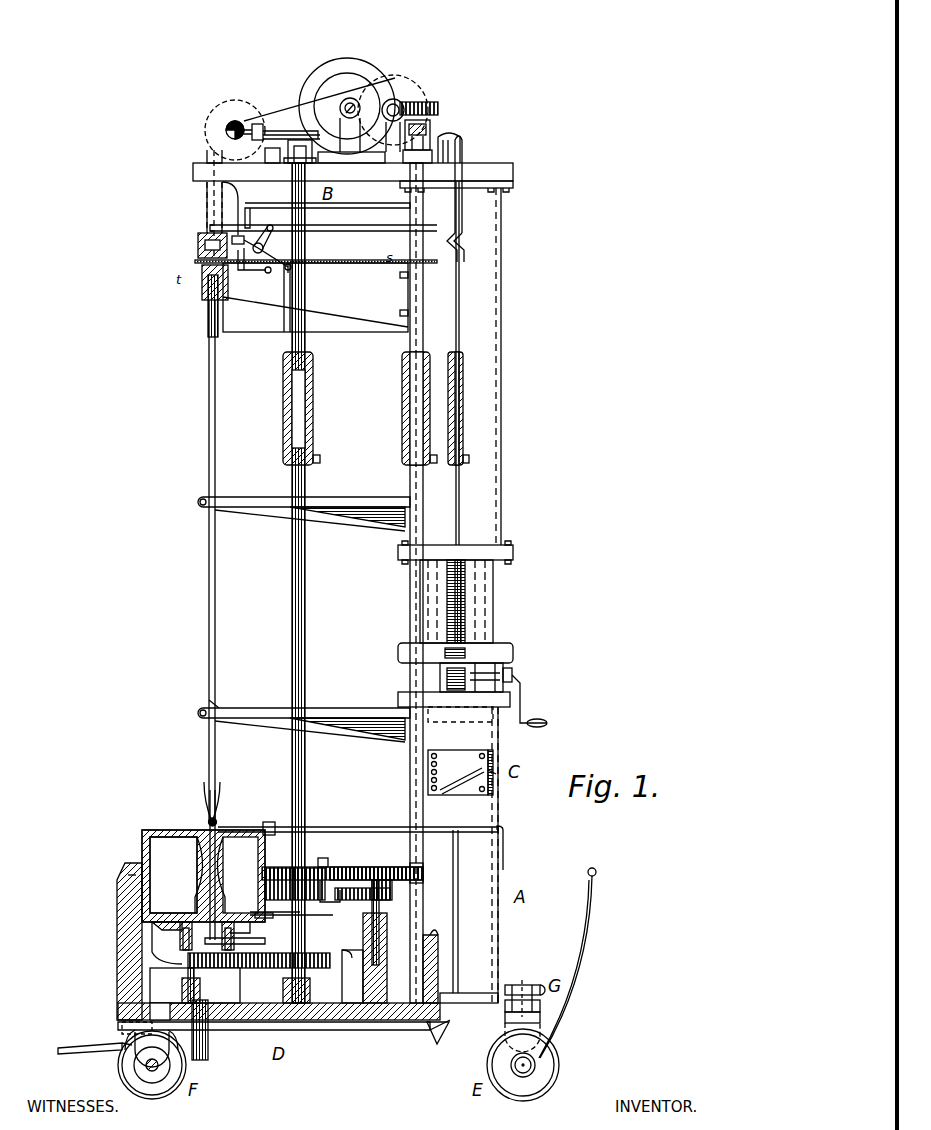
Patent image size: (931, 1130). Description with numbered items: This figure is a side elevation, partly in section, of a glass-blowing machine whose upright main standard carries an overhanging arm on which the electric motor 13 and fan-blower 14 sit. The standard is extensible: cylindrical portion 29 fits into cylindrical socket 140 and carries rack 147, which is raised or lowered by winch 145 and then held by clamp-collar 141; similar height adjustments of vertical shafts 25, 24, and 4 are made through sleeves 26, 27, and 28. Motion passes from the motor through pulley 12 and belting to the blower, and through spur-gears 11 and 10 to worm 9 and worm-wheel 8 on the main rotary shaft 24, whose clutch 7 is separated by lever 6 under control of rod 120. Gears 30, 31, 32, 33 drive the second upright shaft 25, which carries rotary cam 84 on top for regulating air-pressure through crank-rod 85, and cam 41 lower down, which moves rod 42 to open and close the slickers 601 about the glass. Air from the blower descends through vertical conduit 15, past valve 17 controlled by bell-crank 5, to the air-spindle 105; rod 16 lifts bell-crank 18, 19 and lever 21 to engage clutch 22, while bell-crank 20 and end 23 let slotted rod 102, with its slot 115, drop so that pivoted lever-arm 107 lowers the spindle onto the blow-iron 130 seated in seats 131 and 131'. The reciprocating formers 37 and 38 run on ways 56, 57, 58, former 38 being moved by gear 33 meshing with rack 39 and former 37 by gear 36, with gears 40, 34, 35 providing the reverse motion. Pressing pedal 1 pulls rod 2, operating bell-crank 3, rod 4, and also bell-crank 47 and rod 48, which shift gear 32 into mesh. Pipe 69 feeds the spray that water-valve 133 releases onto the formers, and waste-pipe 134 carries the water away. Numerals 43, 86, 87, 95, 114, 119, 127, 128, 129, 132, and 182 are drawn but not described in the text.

The pedal 1 is at (92, 1048).
The rod 2 is at (308, 989).
The bell-crank 3 is at (435, 1043).
The rod 4 is at (458, 858).
The bell-crank 5 is at (493, 248).
The lever 6 is at (460, 137).
The clutch 7 is at (430, 129).
The worm-wheel 8 is at (438, 110).
The worm 9 is at (408, 104).
The spur-gear 10 is at (411, 90).
The spur-gear 11 is at (355, 104).
The pulley 12 is at (358, 88).
The electric motor 13 is at (348, 85).
The fan-blower 14 is at (246, 112).
The vertical conduit 15 is at (207, 196).
The rod 16 is at (352, 238).
The valve 17 is at (210, 232).
The bell-crank 18 is at (271, 239).
The bell-crank 19 is at (241, 240).
The bell-crank 20 is at (285, 272).
The lever 21 is at (252, 268).
The clutch 22 is at (198, 266).
The end of bell-crank 23 is at (298, 270).
The main rotary shaft 24 is at (382, 769).
The second upright rotary shaft 25 is at (307, 351).
The sleeve 26 is at (308, 408).
The sleeve 27 is at (406, 408).
The sleeve 28 is at (465, 363).
The cylindrical portion 29 is at (461, 592).
The gear 30 is at (435, 860).
The gear 31 is at (391, 867).
The gear 32 is at (322, 858).
The gear 33 is at (277, 870).
The gear 34 is at (390, 895).
The gear 35 is at (358, 872).
The gear 36 is at (203, 985).
The reciprocating former 37 is at (203, 876).
The reciprocating former 38 is at (226, 875).
The rack 39 is at (260, 932).
The gear 40 is at (381, 914).
The cam 41 is at (314, 954).
The rod 42 is at (255, 942).
The bearing 43 is at (287, 987).
The bell-crank 47 is at (335, 1035).
The rod 48 is at (364, 958).
The way 56 is at (132, 925).
The way 57 is at (174, 938).
The way 58 is at (209, 938).
The pipe 69 is at (262, 822).
The rotary cam 84 is at (291, 136).
The crank-rod 85 is at (260, 127).
The belt 86 is at (250, 122).
The bracket 87 is at (282, 164).
The disc 95 is at (225, 130).
The slotted rod 102 is at (315, 297).
The air-spindle 105 is at (206, 318).
The pivoted lever-arm 107 is at (315, 312).
The box 114 is at (387, 294).
The slot 115 is at (297, 289).
The bracket 119 is at (450, 152).
The rod 120 is at (478, 205).
The platform 127 is at (440, 172).
The arm 128 is at (304, 504).
The arm 129 is at (304, 716).
The blow-iron 130 is at (227, 561).
The seat 131 is at (230, 697).
The seat 131' is at (236, 489).
The shaft 132 is at (265, 804).
The water-valve 133 is at (285, 815).
The waste-pipe 134 is at (214, 1035).
The cylindrical socket 140 is at (445, 692).
The clamp-collar 141 is at (512, 650).
The winch 145 is at (522, 700).
The rack 147 is at (492, 601).
The bearing 182 is at (175, 970).
The slicker 601 is at (202, 842).